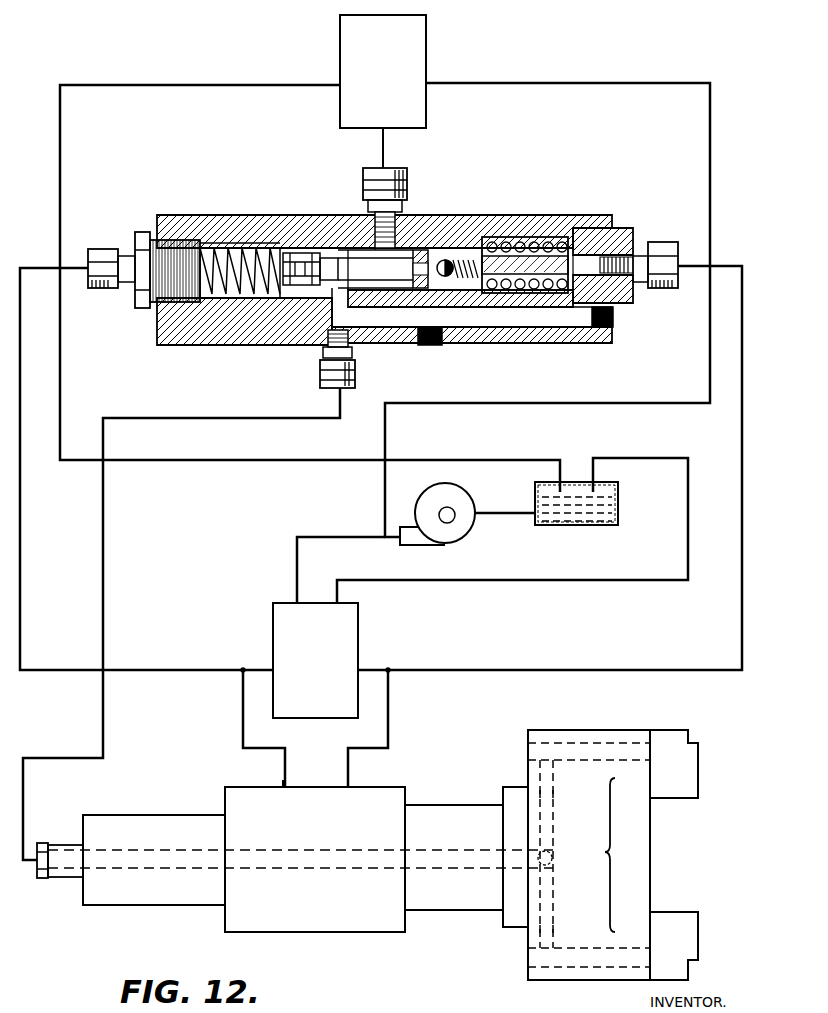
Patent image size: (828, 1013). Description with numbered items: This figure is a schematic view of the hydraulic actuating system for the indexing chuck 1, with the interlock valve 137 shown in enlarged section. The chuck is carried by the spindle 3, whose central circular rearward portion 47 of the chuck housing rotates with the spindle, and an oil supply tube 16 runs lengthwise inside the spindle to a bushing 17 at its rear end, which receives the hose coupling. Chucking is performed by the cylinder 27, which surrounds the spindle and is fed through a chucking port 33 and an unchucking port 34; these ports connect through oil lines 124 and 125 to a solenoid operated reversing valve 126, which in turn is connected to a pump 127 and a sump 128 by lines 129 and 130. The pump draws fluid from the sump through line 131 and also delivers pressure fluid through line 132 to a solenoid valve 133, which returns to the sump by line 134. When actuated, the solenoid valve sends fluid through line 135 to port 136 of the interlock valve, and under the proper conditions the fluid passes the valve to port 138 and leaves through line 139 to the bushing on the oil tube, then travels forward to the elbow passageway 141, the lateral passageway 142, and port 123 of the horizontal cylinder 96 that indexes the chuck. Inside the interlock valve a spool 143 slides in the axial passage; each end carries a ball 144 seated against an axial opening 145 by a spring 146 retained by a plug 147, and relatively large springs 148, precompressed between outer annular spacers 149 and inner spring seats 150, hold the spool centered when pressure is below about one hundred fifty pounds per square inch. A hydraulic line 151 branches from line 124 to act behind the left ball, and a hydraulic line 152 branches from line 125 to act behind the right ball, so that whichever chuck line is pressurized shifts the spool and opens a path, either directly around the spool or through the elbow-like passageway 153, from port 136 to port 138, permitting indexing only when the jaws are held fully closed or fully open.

The indexing chuck 1 is at (717, 740).
The spindle 3 is at (153, 905).
The oil supply tube 16 is at (310, 868).
The bushing 17 is at (42, 843).
The cylinder 27 is at (322, 932).
The chucking port 33 is at (283, 787).
The unchucking port 34 is at (350, 787).
The central circular rearward portion of the chuck housing 47 is at (612, 852).
The horizontal cylinder 96 is at (577, 743).
The port of cylinder 96 123 is at (540, 760).
The oil line 124 is at (243, 718).
The oil line 125 is at (388, 718).
The solenoid operated reversing valve 126 is at (358, 628).
The pump 127 is at (465, 535).
The sump 128 is at (622, 518).
The line 129 is at (297, 570).
The line 130 is at (493, 583).
The line 131 is at (505, 512).
The line 132 is at (512, 83).
The solenoid valve 133 is at (426, 38).
The line 134 is at (60, 140).
The line 135 is at (383, 160).
The port 136 is at (388, 240).
The interlock valve 137 is at (157, 327).
The port 138 is at (325, 335).
The line 139 is at (205, 419).
The elbow passageway 141 is at (555, 862).
The lateral passageway 142 is at (555, 797).
The spool 143 is at (365, 266).
The balls 144 is at (325, 250).
The axial openings 145 is at (432, 283).
The springs 146 is at (317, 262).
The retaining plugs 147 is at (283, 252).
The springs 148 is at (520, 250).
The outer annular spacers 149 is at (568, 245).
The inner spring seats 150 is at (280, 300).
The hydraulic line 151 is at (20, 553).
The hydraulic line 152 is at (650, 668).
The elbow-like passageway 153 is at (357, 320).